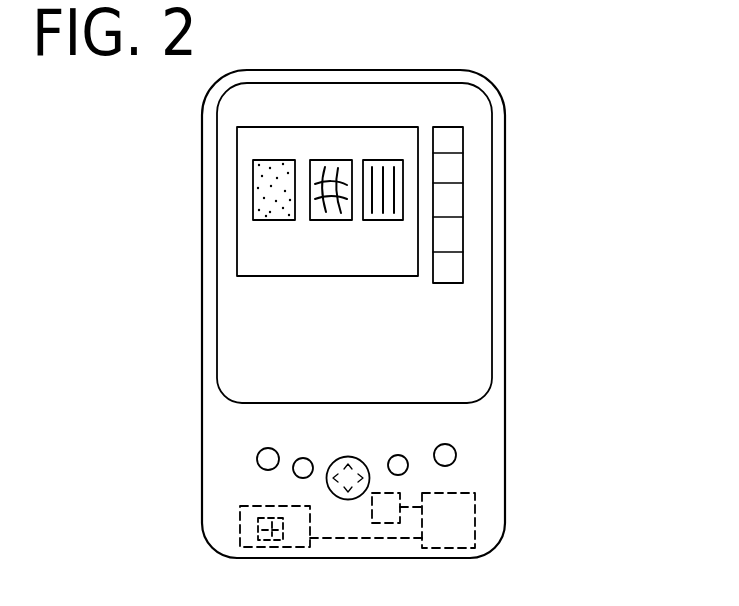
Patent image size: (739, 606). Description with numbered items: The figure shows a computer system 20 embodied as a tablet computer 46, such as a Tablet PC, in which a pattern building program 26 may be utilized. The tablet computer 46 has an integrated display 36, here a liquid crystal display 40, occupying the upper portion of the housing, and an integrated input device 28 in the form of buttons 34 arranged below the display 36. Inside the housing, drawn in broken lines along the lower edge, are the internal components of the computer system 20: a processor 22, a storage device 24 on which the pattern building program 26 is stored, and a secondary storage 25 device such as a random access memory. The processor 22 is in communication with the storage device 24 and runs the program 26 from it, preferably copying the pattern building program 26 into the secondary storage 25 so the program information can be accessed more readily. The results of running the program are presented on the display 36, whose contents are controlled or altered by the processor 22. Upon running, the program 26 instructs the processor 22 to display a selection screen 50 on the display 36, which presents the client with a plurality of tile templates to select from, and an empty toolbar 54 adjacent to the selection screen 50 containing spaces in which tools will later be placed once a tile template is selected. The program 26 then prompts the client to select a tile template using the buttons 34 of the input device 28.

The computer system 20 is at (436, 308).
The tablet computer 46 is at (507, 133).
The display 36 is at (412, 243).
The liquid crystal display 40 is at (472, 342).
The selection screen 50 is at (295, 287).
The empty toolbar 54 is at (443, 296).
The input device 28 is at (427, 466).
The buttons 34 is at (456, 453).
The storage device 24 is at (240, 517).
The pattern building program 26 is at (272, 548).
The secondary storage device 25 is at (387, 505).
The processor 22 is at (448, 528).